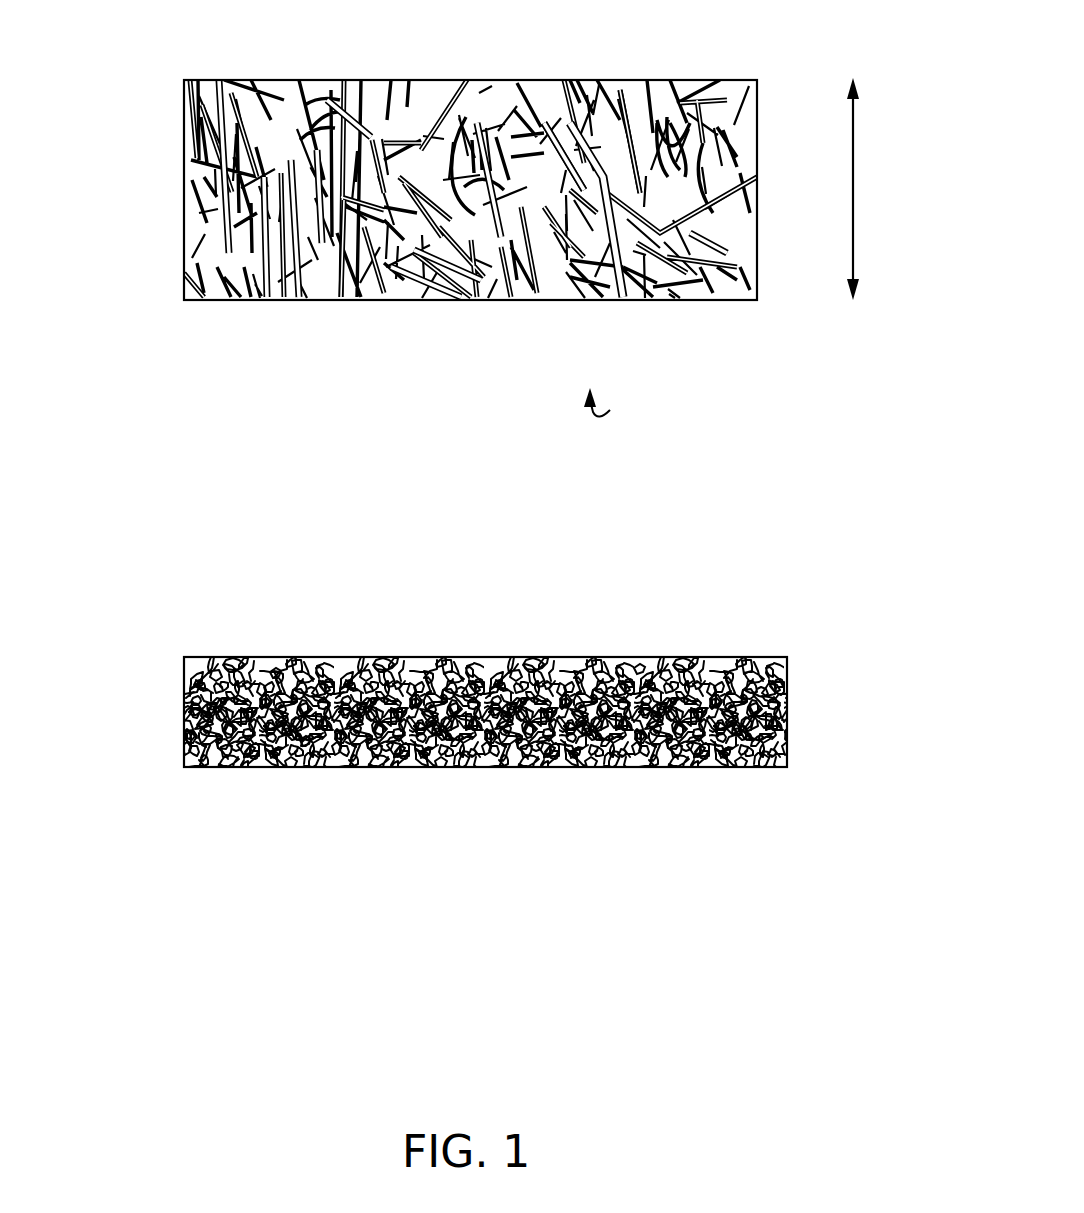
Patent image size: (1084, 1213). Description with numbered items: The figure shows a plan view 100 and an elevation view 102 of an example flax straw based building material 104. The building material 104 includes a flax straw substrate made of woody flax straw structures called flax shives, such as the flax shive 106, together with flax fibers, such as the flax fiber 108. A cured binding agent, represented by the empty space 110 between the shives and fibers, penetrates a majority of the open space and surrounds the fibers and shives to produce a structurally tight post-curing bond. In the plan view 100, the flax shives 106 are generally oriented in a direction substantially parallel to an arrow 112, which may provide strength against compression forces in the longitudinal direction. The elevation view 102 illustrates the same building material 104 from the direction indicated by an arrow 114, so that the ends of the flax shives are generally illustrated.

The plan view 100 is at (140, 64).
The elevation view 102 is at (140, 649).
The flax straw based building material 104 is at (184, 162).
The flax shive 106 is at (340, 290).
The flax fiber 108 is at (623, 92).
The empty space 110 is at (527, 88).
The arrow 112 is at (853, 185).
The arrow 114 is at (610, 410).